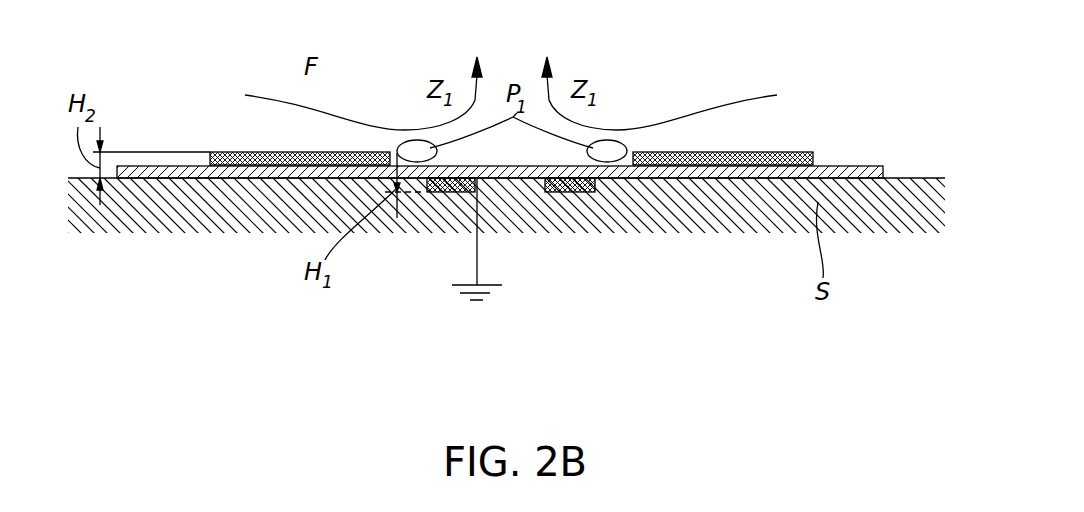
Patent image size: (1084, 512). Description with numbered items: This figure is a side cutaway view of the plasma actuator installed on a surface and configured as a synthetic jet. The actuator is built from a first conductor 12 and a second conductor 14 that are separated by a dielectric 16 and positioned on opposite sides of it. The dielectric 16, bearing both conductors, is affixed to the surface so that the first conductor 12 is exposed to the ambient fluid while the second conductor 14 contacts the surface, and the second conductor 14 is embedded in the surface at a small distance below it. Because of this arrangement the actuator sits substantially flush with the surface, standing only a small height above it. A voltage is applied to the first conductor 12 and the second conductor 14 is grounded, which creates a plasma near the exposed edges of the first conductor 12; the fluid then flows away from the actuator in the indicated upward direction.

The first conductor 12 is at (300, 172).
The second conductor 14 is at (450, 192).
The dielectric 16 is at (870, 165).